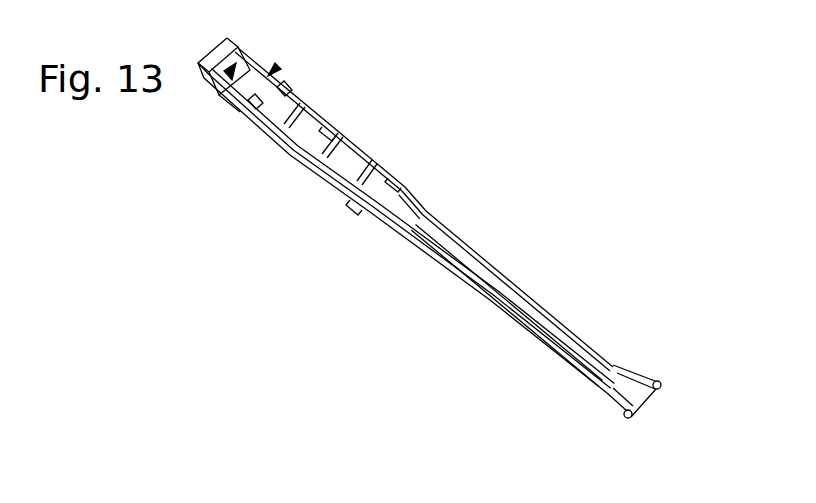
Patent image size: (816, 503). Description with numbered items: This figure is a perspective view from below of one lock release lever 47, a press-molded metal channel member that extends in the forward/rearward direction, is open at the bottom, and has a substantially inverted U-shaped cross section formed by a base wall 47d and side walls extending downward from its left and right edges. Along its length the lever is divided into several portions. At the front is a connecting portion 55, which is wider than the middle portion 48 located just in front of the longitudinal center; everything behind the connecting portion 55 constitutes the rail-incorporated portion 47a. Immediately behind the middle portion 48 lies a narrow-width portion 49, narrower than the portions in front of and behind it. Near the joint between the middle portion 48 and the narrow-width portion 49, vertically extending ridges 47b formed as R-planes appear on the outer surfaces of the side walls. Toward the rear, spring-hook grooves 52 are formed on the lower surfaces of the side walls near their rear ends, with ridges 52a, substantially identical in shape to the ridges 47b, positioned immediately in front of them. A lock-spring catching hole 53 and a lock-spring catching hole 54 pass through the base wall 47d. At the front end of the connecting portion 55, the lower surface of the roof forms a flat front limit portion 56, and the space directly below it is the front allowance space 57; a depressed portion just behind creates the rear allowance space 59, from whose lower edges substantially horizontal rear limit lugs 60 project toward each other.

The lock release lever 47 is at (412, 234).
The rail-incorporated portion 47a is at (411, 56).
The ridges 47b is at (408, 184).
The base wall 47d is at (345, 162).
The middle portion 48 is at (358, 87).
The narrow-width portion 49 is at (465, 216).
The spring-hook grooves 52 is at (648, 376).
The ridges 52a is at (640, 368).
The lock-spring catching hole 53 is at (358, 214).
The lock-spring catching hole 54 is at (290, 124).
The connecting portion 55 is at (265, 11).
The front limit portion 56 is at (218, 62).
The front allowance space 57 is at (222, 96).
The rear allowance space 59 is at (273, 68).
The rear limit lugs 60 is at (273, 80).